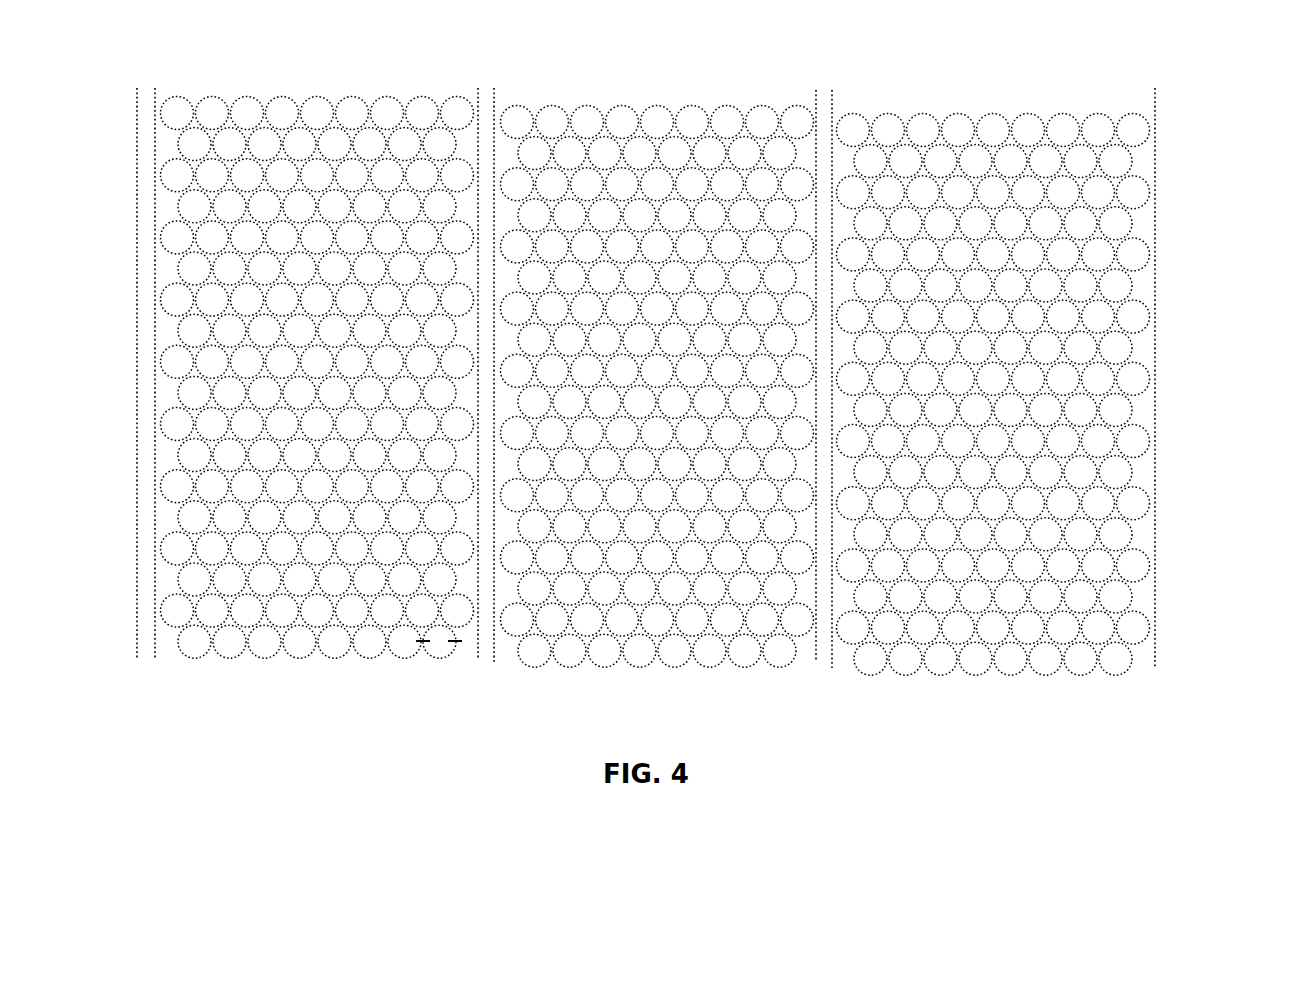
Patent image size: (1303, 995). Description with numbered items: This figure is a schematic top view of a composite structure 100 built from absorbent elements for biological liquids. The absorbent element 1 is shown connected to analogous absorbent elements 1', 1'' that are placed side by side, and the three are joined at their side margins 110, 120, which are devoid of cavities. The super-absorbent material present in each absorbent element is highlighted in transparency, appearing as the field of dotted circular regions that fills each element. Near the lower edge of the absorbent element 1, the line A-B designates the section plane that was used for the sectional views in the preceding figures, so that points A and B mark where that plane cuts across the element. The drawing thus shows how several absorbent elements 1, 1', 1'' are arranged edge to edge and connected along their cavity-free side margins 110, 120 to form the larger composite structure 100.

The composite structure 100 is at (1197, 85).
The side margin 110 is at (485, 90).
The side margin 120 is at (822, 97).
The absorbent element 1 is at (317, 436).
The absorbent element 1' is at (657, 424).
The absorbent element 1'' is at (993, 432).
The section line endpoint A is at (423, 646).
The section line endpoint B is at (455, 646).